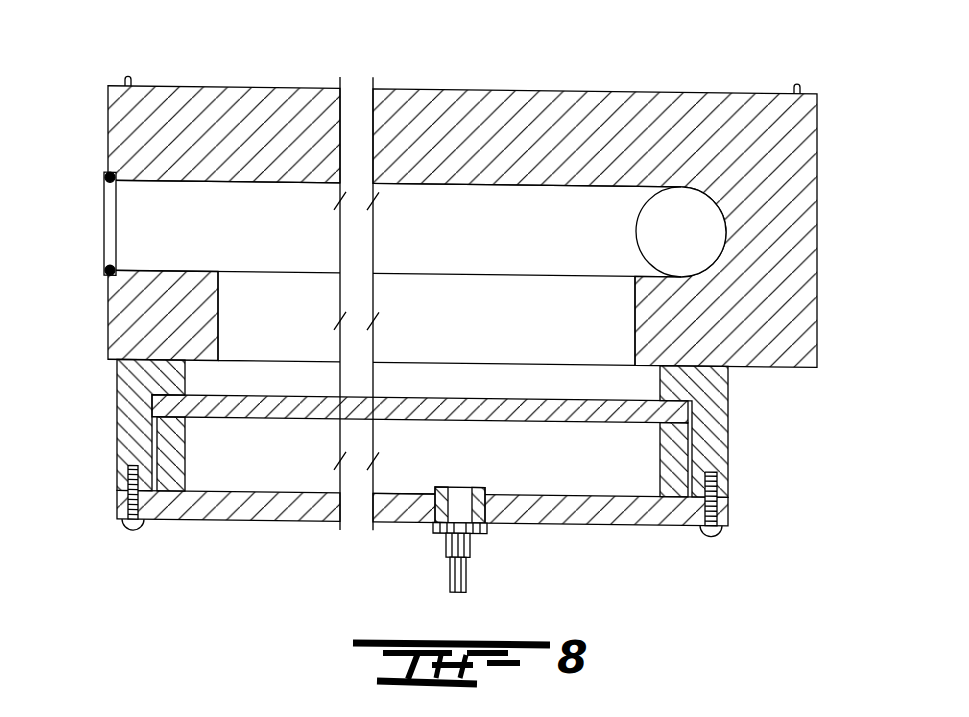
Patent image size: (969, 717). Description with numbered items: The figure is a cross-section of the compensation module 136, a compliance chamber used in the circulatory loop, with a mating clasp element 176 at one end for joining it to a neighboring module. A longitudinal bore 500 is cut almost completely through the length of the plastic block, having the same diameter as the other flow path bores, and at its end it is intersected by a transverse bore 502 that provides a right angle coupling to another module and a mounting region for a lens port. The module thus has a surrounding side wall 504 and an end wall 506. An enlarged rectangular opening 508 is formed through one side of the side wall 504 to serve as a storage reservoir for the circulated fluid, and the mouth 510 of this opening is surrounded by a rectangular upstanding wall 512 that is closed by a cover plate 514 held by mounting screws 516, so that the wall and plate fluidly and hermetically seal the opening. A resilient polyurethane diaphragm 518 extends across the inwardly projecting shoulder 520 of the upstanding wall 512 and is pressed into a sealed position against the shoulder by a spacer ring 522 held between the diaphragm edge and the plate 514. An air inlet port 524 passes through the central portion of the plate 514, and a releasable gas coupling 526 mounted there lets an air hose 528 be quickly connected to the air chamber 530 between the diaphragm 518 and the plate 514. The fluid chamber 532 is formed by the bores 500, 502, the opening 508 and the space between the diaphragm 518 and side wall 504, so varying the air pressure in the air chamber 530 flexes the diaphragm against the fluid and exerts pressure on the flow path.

The compensation module 136 is at (627, 203).
The mating clasp element 176 is at (117, 213).
The longitudinal bore 500 is at (487, 228).
The transverse bore 502 is at (647, 214).
The side wall 504 is at (258, 84).
The end wall 506 is at (809, 195).
The rectangular opening 508 is at (515, 282).
The mouth 510 is at (285, 346).
The upstanding wall 512 is at (722, 446).
The cover plate 514 is at (577, 518).
The mounting screws 516 is at (133, 530).
The resilient diaphragm 518 is at (420, 426).
The inwardly projecting shoulder 520 is at (178, 377).
The spacer ring 522 is at (178, 448).
The air inlet port 524 is at (458, 476).
The releasable gas coupling 526 is at (440, 528).
The air hose 528 is at (470, 572).
The air chamber 530 is at (430, 448).
The fluid chamber 532 is at (540, 340).